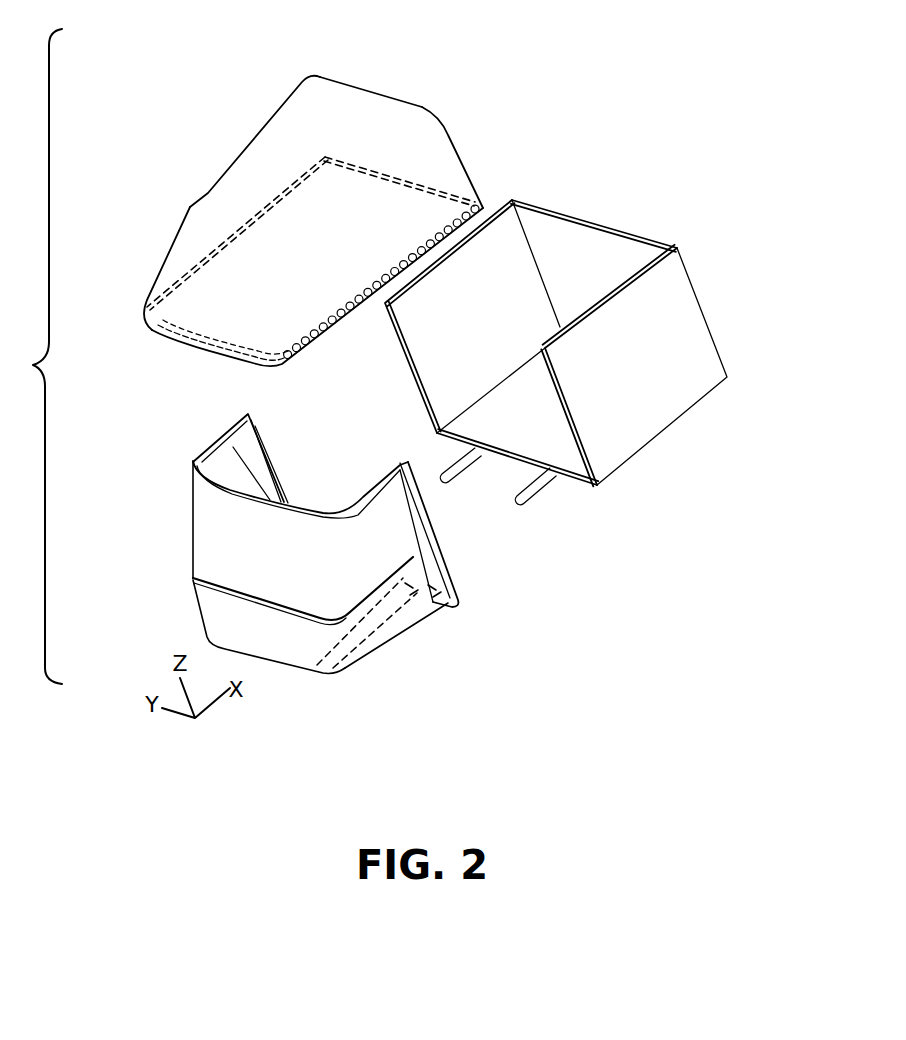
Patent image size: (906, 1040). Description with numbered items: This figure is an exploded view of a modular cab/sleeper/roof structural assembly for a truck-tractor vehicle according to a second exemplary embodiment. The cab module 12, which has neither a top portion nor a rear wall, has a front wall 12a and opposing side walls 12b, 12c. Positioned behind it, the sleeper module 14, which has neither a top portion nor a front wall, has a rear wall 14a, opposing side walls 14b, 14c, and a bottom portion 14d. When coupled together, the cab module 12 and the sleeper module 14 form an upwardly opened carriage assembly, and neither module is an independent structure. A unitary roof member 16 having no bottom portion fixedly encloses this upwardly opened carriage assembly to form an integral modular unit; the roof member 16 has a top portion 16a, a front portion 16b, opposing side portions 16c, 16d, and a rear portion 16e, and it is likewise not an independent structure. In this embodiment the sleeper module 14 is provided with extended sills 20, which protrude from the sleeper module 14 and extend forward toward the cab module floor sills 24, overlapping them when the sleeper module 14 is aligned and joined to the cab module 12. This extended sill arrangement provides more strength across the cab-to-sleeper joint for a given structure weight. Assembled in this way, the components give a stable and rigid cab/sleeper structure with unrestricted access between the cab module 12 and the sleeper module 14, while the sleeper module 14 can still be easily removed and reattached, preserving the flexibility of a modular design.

The cab module 12 is at (330, 722).
The front wall 12a is at (200, 557).
The side wall 12b is at (217, 462).
The side wall 12c is at (392, 632).
The sleeper module 14 is at (750, 284).
The rear wall 14a is at (603, 222).
The side wall 14b is at (493, 233).
The side wall 14c is at (670, 413).
The bottom portion 14d is at (512, 438).
The roof member 16 is at (243, 67).
The top portion 16a is at (338, 79).
The front portion 16b is at (152, 278).
The side portion 16c is at (210, 197).
The side portion 16d is at (333, 340).
The rear portion 16e is at (413, 117).
The extended sills 20 is at (543, 495).
The cab module floor sills 24 is at (363, 657).